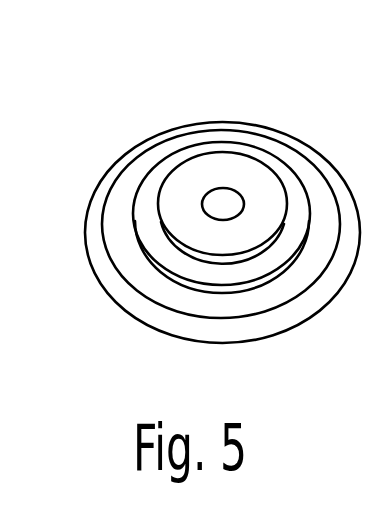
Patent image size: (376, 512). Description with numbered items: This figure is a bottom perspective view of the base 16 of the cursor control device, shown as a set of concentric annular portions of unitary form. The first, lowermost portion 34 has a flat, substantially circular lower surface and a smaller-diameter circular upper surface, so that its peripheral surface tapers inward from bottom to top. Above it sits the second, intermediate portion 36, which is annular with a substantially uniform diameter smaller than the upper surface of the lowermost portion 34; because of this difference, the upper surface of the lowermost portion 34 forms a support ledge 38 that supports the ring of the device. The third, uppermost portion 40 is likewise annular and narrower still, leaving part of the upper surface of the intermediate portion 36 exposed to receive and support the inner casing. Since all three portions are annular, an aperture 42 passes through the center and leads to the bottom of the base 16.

The base 16 is at (243, 110).
The first, lowermost portion 34 is at (117, 304).
The second, intermediate portion 36 is at (127, 201).
The support ledge 38 is at (165, 177).
The third, uppermost portion 40 is at (197, 165).
The aperture 42 is at (228, 203).